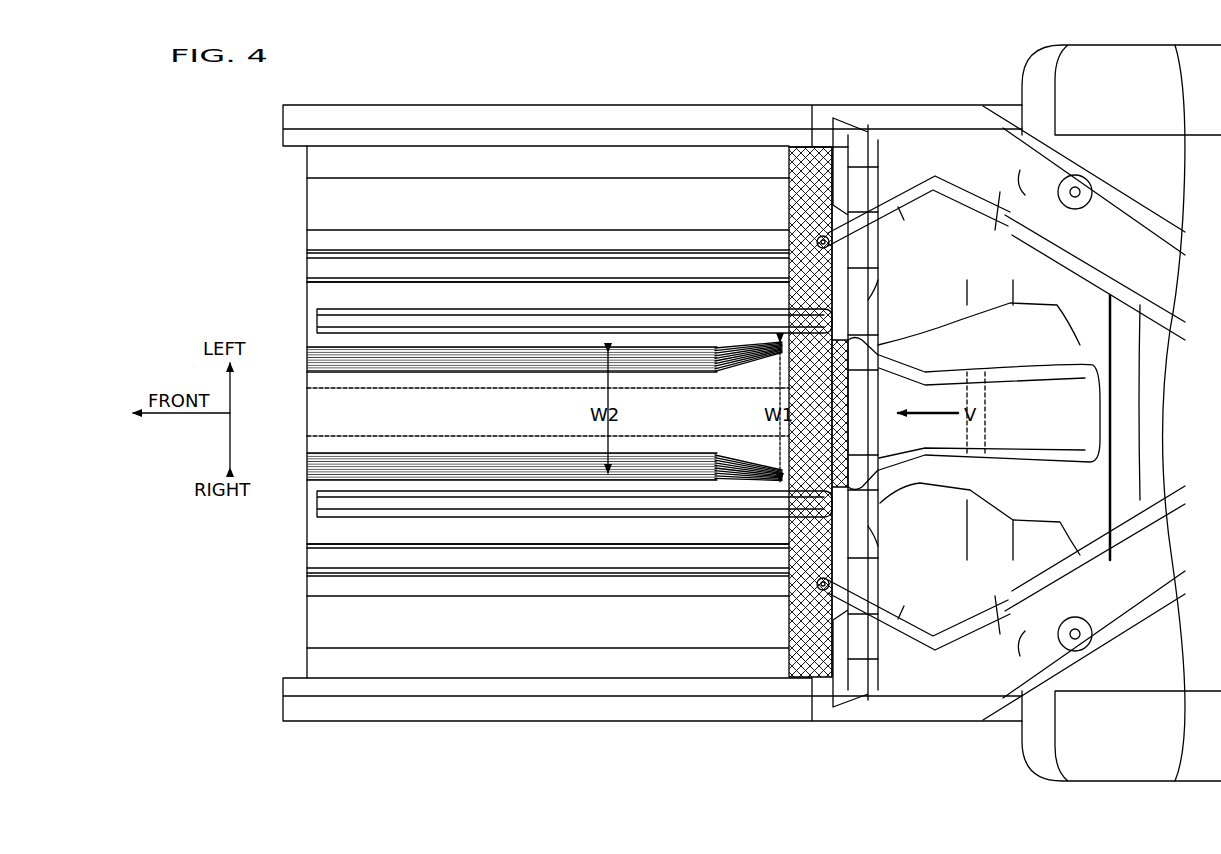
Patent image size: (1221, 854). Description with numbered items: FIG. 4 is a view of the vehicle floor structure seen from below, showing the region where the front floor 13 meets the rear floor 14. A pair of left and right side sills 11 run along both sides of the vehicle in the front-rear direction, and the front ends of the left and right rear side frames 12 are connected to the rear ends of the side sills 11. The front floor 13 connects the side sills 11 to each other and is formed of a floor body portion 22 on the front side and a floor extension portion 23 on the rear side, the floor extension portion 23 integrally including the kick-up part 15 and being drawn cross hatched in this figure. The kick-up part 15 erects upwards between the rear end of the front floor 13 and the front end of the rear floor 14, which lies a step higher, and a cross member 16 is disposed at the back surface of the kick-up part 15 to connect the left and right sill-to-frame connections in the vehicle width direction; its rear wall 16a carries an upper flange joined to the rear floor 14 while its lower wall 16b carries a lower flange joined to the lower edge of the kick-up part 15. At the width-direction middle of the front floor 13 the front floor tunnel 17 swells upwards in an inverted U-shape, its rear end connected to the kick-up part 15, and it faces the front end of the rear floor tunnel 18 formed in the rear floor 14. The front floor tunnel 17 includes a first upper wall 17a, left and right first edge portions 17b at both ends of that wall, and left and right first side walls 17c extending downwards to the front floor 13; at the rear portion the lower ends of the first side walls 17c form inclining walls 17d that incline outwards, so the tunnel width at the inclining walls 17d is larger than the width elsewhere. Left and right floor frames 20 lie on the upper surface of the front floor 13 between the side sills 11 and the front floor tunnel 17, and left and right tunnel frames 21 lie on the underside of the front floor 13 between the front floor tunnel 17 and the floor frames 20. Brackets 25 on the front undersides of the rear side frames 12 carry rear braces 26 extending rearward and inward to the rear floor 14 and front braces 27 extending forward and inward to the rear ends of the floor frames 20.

The side sill 11 is at (401, 124).
The rear side frame 12 is at (1145, 205).
The front floor 13 is at (652, 359).
The rear floor 14 is at (931, 274).
The kick-up part 15 is at (855, 350).
The cross member 16 is at (880, 512).
The rear wall 16a is at (872, 306).
The lower wall 16b is at (868, 528).
The front floor tunnel 17 is at (548, 370).
The first upper wall 17a is at (432, 427).
The first edge portion 17b is at (560, 372).
The first side wall 17c is at (706, 416).
The inclining wall 17d is at (765, 345).
The rear floor tunnel 18 is at (1022, 385).
The floor frame 20 is at (547, 248).
The tunnel frame 21 is at (330, 323).
The floor body portion 22 is at (585, 160).
The floor extension portion 23 is at (786, 374).
The bracket 25 is at (937, 190).
The rear brace 26 is at (1140, 285).
The front brace 27 is at (862, 217).